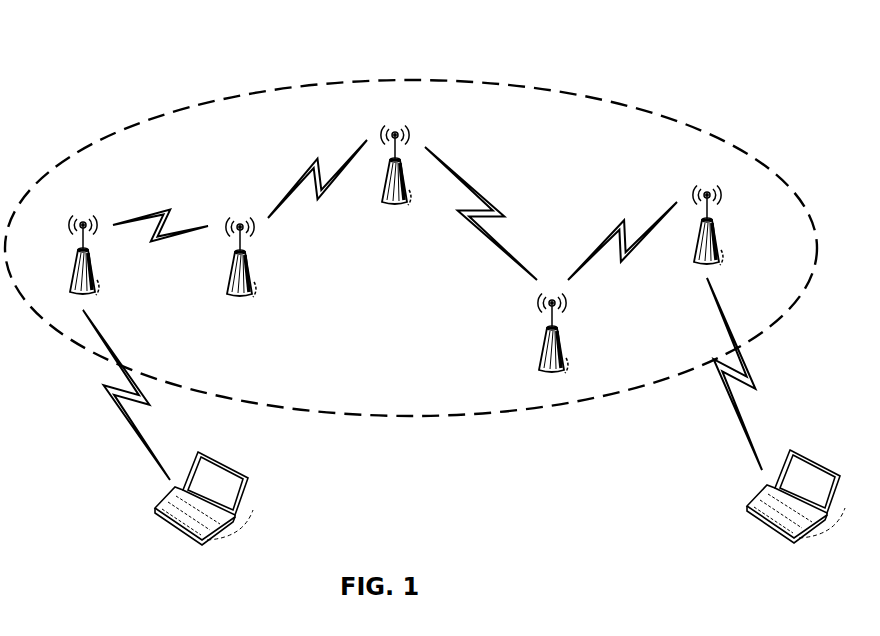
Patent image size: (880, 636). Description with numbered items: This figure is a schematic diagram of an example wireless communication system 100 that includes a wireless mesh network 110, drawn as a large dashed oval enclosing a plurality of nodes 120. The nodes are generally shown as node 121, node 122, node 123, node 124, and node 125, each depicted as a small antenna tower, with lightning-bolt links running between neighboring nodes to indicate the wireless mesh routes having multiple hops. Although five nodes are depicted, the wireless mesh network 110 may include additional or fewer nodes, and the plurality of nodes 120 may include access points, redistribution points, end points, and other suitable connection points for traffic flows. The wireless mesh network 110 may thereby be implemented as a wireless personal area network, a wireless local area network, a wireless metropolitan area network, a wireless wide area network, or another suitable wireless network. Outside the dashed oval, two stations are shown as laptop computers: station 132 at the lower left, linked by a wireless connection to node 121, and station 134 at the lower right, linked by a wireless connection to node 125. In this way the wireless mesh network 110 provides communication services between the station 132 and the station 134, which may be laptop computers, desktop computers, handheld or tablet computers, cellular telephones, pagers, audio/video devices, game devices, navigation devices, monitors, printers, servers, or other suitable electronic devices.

The wireless communication system 100 is at (95, 42).
The wireless mesh network 110 is at (421, 80).
The plurality of nodes 120 is at (233, 152).
The node 121 is at (94, 282).
The node 122 is at (252, 269).
The node 123 is at (396, 205).
The node 124 is at (540, 360).
The node 125 is at (720, 241).
The station 132 is at (160, 506).
The station 134 is at (752, 506).